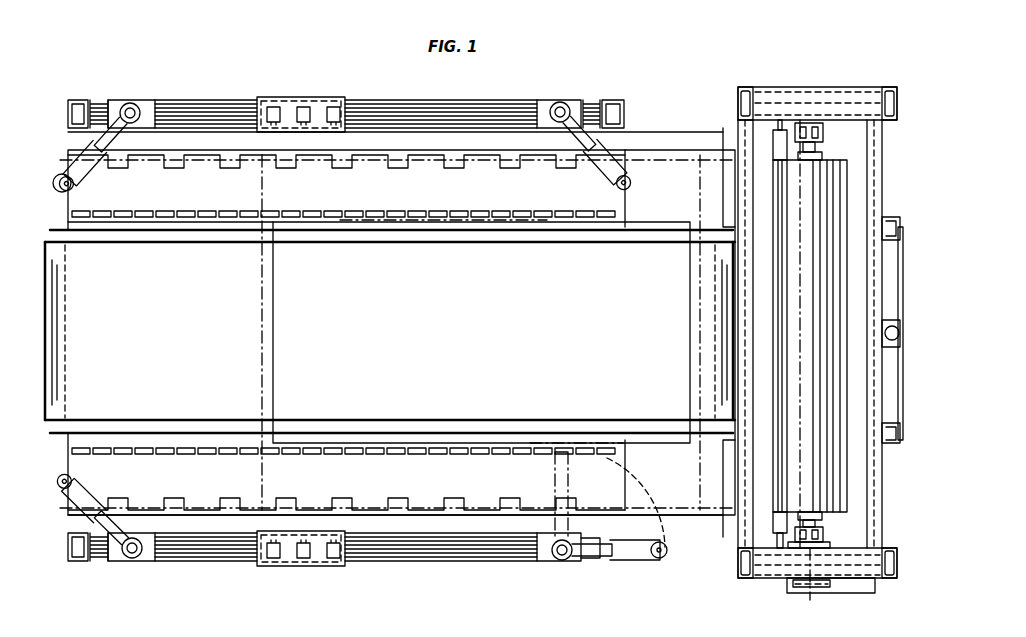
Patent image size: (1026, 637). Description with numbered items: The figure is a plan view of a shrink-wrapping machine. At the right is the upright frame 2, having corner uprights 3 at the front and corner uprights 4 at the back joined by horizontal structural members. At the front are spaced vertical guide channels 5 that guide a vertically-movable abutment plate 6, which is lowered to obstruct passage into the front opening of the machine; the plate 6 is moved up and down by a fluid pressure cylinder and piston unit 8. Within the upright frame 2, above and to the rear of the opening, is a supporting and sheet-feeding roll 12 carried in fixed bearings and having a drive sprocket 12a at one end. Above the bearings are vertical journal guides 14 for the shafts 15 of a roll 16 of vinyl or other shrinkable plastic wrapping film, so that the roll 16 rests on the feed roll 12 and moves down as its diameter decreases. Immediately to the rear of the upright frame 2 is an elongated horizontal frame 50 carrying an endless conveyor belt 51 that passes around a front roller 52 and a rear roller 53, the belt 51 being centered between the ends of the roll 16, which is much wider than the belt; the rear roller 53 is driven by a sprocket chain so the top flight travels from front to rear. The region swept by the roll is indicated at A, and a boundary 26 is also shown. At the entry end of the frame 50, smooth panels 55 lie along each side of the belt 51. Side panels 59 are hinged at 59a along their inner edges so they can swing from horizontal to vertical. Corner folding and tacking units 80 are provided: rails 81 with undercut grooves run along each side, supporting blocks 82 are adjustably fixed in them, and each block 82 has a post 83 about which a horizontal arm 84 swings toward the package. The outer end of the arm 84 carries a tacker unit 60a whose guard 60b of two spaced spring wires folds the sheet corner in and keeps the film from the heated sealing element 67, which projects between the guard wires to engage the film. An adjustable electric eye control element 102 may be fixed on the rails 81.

The upright frame 2 is at (730, 566).
The corner upright 3 is at (894, 92).
The corner upright 4 is at (737, 92).
The vertical guide channel 5 is at (892, 222).
The abutment plate 6 is at (903, 288).
The fluid pressure cylinder and piston unit 8 is at (881, 336).
The supporting and sheet-feeding roll 12 is at (824, 514).
The drive sprocket 12a is at (820, 590).
The vertical journal guide 14 is at (824, 131).
The shaft 15 is at (816, 148).
The roll of shrinkable wrapping film 16 is at (836, 412).
The roll rod 26 is at (772, 420).
The horizontal frame 50 is at (683, 546).
The endless conveyor belt 51 is at (205, 343).
The front roller 52 is at (714, 320).
The rear roller 53 is at (62, 305).
The smooth panel 55 is at (710, 199).
The side panel 59 is at (206, 197).
The hinge 59a is at (155, 210).
The tacker unit 60a is at (82, 182).
The guard 60b is at (628, 190).
The heated sealing element 67 is at (57, 192).
The corner folding unit and tacker 80 is at (76, 166).
The rail 81 is at (430, 100).
The supporting block 82 is at (118, 100).
The post 83 is at (140, 106).
The horizontal arm 84 is at (112, 138).
The electric eye control element 102 is at (332, 106).
The roll path A is at (271, 283).